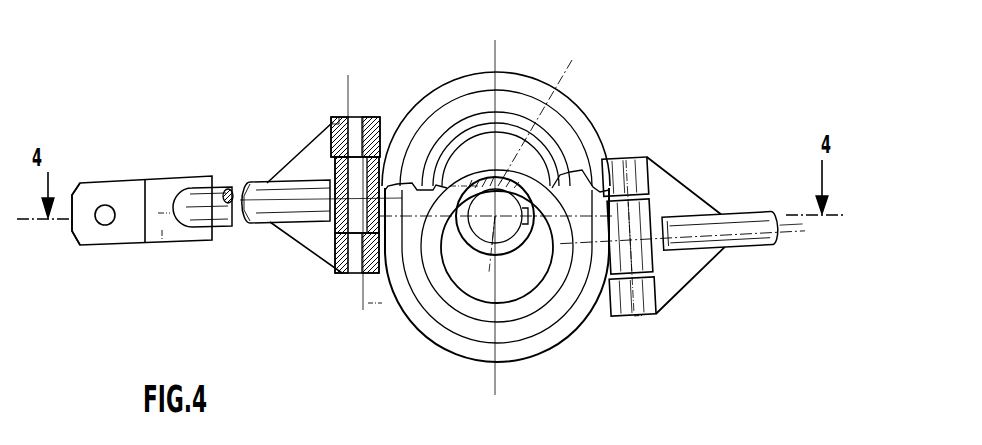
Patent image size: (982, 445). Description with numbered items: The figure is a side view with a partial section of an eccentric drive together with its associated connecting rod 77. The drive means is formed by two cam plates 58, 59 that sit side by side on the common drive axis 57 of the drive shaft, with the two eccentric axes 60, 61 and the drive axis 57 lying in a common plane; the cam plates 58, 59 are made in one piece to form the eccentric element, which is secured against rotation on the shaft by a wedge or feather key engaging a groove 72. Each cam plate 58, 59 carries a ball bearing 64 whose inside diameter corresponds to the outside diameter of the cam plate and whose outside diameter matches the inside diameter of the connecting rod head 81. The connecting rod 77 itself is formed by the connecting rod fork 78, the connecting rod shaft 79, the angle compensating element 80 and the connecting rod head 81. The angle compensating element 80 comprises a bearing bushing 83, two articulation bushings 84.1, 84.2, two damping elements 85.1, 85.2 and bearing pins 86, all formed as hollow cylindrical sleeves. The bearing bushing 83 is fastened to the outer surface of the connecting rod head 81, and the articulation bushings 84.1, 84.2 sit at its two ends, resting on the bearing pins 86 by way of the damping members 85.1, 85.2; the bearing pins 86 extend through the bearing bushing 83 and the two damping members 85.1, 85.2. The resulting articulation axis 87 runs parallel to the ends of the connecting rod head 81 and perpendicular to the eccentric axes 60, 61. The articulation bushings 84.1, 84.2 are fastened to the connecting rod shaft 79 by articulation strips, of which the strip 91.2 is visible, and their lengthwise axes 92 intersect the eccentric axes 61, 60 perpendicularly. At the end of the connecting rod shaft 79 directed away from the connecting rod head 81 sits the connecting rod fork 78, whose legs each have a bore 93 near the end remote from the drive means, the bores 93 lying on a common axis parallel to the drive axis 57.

The drive axis 57 is at (481, 239).
The cam plate 58 is at (468, 290).
The cam plate 59 is at (532, 142).
The eccentric axis 60 is at (496, 262).
The eccentric axis 61 is at (552, 105).
The ball bearing 64 is at (488, 103).
The groove 72 is at (533, 234).
The connecting rod 77 is at (213, 248).
The connecting rod fork 78 is at (107, 238).
The connecting rod shaft 79 is at (254, 186).
The angle compensating element 80 is at (338, 80).
The connecting rod head 81 is at (526, 92).
The bearing bushing 83 is at (641, 218).
The articulation bushing 84.1 is at (388, 130).
The articulation bushing 84.2 is at (623, 316).
The damping element 85.1 is at (342, 115).
The damping element 85.2 is at (350, 276).
The bearing pin 86 is at (357, 117).
The articulation axis 87 is at (382, 303).
The articulation strip 91.2 is at (290, 248).
The lengthwise axis 92 is at (163, 240).
The bore 93 is at (103, 205).